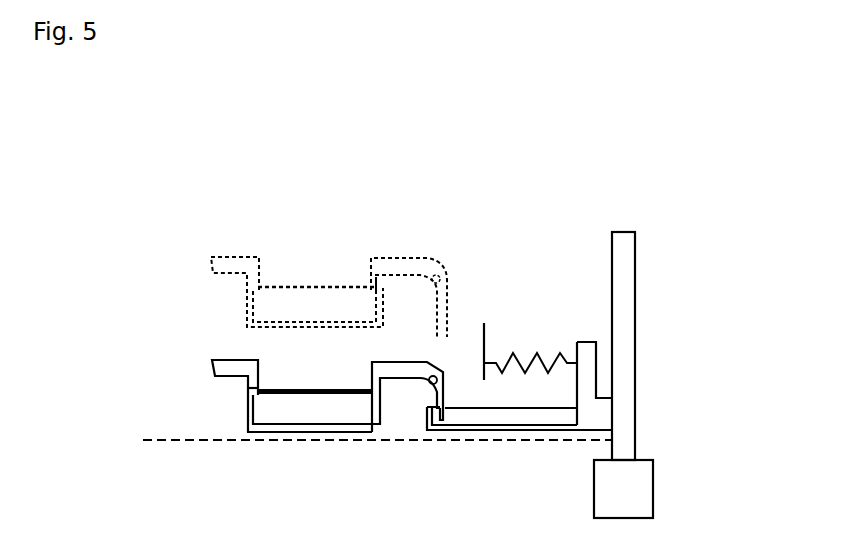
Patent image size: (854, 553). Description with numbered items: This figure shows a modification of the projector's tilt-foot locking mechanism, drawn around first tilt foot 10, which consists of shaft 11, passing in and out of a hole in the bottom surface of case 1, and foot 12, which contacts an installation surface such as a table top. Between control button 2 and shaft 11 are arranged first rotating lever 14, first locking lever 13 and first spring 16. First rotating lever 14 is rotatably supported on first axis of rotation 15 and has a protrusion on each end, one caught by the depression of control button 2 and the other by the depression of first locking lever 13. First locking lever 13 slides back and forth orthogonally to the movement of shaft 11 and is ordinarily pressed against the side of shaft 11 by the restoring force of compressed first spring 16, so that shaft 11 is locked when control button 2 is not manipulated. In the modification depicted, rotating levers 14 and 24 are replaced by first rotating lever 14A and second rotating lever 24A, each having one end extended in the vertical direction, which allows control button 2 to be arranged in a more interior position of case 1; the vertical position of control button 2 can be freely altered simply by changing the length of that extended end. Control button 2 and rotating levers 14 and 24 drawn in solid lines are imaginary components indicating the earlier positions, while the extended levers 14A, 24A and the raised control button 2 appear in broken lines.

The case 1 is at (185, 440).
The control button 2 is at (313, 288).
The first tilt foot 10 is at (735, 375).
The shaft 11 is at (632, 392).
The foot 12 is at (648, 484).
The first locking lever 13 is at (533, 418).
The first rotating lever 14 is at (405, 375).
The first rotating lever 14A is at (390, 265).
The first axis of rotation 15 is at (431, 385).
The first spring 16 is at (525, 358).
The second rotating lever 24 is at (232, 372).
The second rotating lever 24A is at (240, 262).